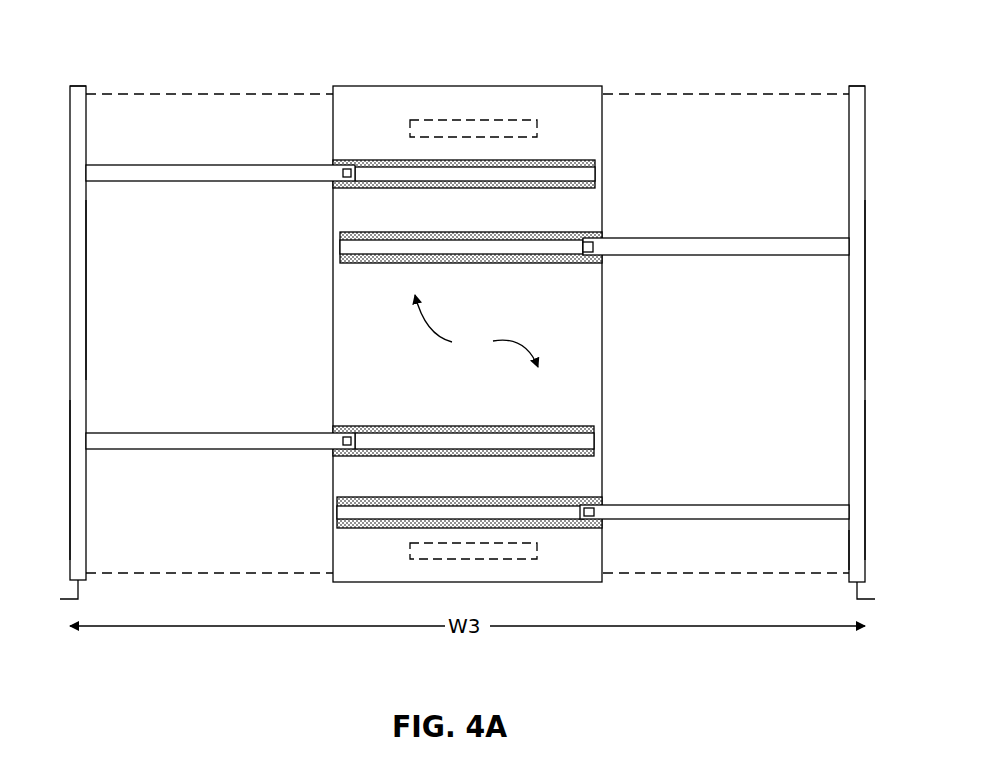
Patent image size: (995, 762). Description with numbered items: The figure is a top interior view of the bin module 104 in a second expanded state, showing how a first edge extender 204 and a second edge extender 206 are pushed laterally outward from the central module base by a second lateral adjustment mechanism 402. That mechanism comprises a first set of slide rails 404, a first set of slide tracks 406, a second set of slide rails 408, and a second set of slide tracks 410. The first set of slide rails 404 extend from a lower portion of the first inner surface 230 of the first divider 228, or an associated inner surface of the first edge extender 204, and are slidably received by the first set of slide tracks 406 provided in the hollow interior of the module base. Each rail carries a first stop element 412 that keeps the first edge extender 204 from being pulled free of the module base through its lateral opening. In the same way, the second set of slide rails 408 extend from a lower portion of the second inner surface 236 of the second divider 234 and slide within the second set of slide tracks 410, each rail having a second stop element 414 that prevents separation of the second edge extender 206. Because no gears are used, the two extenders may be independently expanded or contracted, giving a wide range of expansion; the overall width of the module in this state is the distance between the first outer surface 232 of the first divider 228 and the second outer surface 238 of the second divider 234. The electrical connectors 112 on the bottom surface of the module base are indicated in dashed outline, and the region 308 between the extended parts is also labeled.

The bin module 104 is at (150, 37).
The electrical connectors 112 is at (510, 120).
The first edge extender 204 is at (50, 349).
The second edge extender 206 is at (883, 349).
The first divider 228 is at (86, 290).
The first inner surface 230 is at (86, 147).
The first outer surface 232 is at (70, 504).
The second divider 234 is at (865, 453).
The second inner surface 236 is at (849, 196).
The second outer surface 238 is at (865, 277).
The gap 308 is at (823, 550).
The second lateral adjustment mechanism 402 is at (476, 331).
The first set of slide rails 404 is at (288, 182).
The first set of slide tracks 406 is at (437, 175).
The second set of slide rails 408 is at (635, 258).
The second set of slide tracks 410 is at (484, 254).
The first stop element 412 is at (345, 168).
The second stop element 414 is at (585, 252).